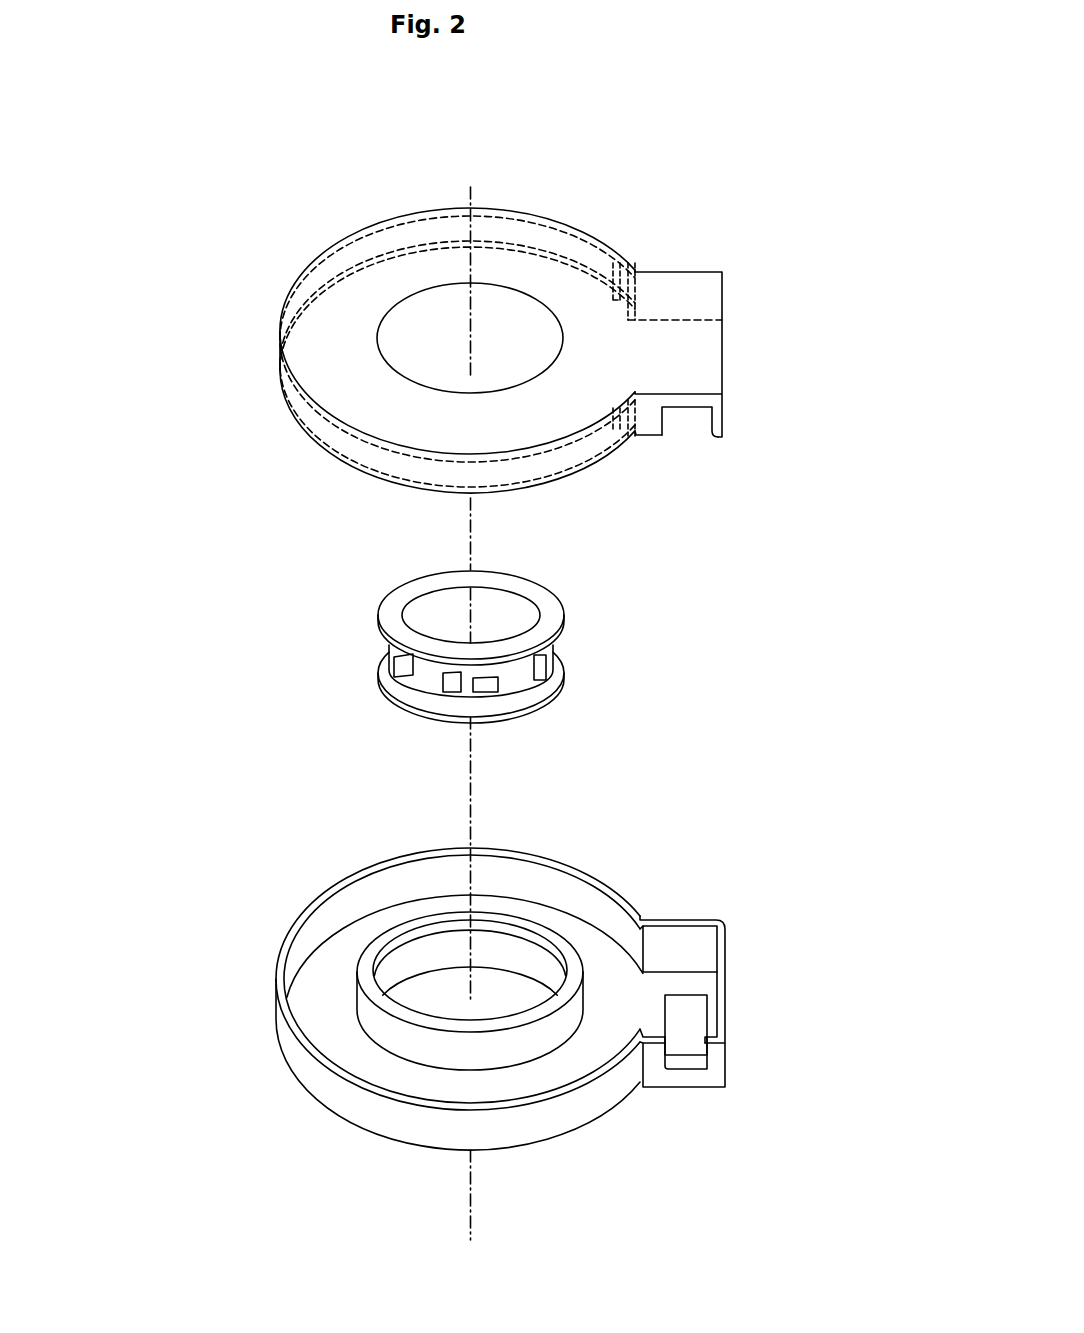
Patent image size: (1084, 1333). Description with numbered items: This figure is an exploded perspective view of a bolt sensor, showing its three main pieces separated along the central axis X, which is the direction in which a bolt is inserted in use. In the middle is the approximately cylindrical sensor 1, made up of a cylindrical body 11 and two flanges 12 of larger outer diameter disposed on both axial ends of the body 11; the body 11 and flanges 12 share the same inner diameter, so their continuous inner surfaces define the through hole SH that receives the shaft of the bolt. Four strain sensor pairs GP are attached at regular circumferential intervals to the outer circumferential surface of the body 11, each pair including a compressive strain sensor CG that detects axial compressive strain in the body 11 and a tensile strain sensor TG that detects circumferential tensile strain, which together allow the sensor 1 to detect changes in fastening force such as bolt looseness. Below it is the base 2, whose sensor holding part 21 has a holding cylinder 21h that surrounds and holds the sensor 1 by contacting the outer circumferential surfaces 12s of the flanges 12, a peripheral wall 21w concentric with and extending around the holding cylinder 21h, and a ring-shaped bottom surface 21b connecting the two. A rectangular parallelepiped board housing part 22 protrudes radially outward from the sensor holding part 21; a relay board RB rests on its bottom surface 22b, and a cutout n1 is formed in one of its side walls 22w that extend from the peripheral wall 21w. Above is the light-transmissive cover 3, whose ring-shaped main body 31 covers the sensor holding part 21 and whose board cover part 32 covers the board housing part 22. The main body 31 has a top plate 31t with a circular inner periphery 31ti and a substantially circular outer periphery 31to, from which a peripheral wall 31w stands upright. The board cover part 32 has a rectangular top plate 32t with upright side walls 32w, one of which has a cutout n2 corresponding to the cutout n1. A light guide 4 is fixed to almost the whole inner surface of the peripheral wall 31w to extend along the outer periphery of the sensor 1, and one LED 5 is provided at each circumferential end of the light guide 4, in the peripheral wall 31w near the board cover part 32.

The cover 3 is at (244, 236).
The main body 31 is at (280, 370).
The top plate 31t is at (339, 307).
The inner periphery 31ti is at (387, 320).
The peripheral wall 31w is at (293, 433).
The outer periphery 31to is at (342, 424).
The light guide 4 is at (538, 238).
The LED 5 is at (633, 250).
The board cover part 32 is at (722, 300).
The top plate 32t is at (700, 368).
The side walls 32w is at (647, 423).
The cutout n2 is at (663, 422).
The central axis X is at (471, 695).
The sensor 1 is at (342, 643).
The through hole SH is at (415, 614).
The flanges 12 is at (537, 592).
The outer circumferential surfaces 12s is at (560, 633).
The cylindrical body 11 is at (553, 653).
The strain sensor pairs GP is at (298, 692).
The compressive strain sensor CG is at (448, 683).
The tensile strain sensor TG is at (478, 693).
The base 2 is at (222, 972).
The sensor holding part 21 is at (315, 1103).
The holding cylinder 21h is at (523, 920).
The bottom surface 21b is at (393, 1082).
The peripheral wall 21w is at (593, 1108).
The board housing part 22 is at (725, 1063).
The bottom surface 22b is at (693, 983).
The side walls 22w is at (715, 1075).
The relay board RB is at (685, 1018).
The cutout n1 is at (667, 1047).